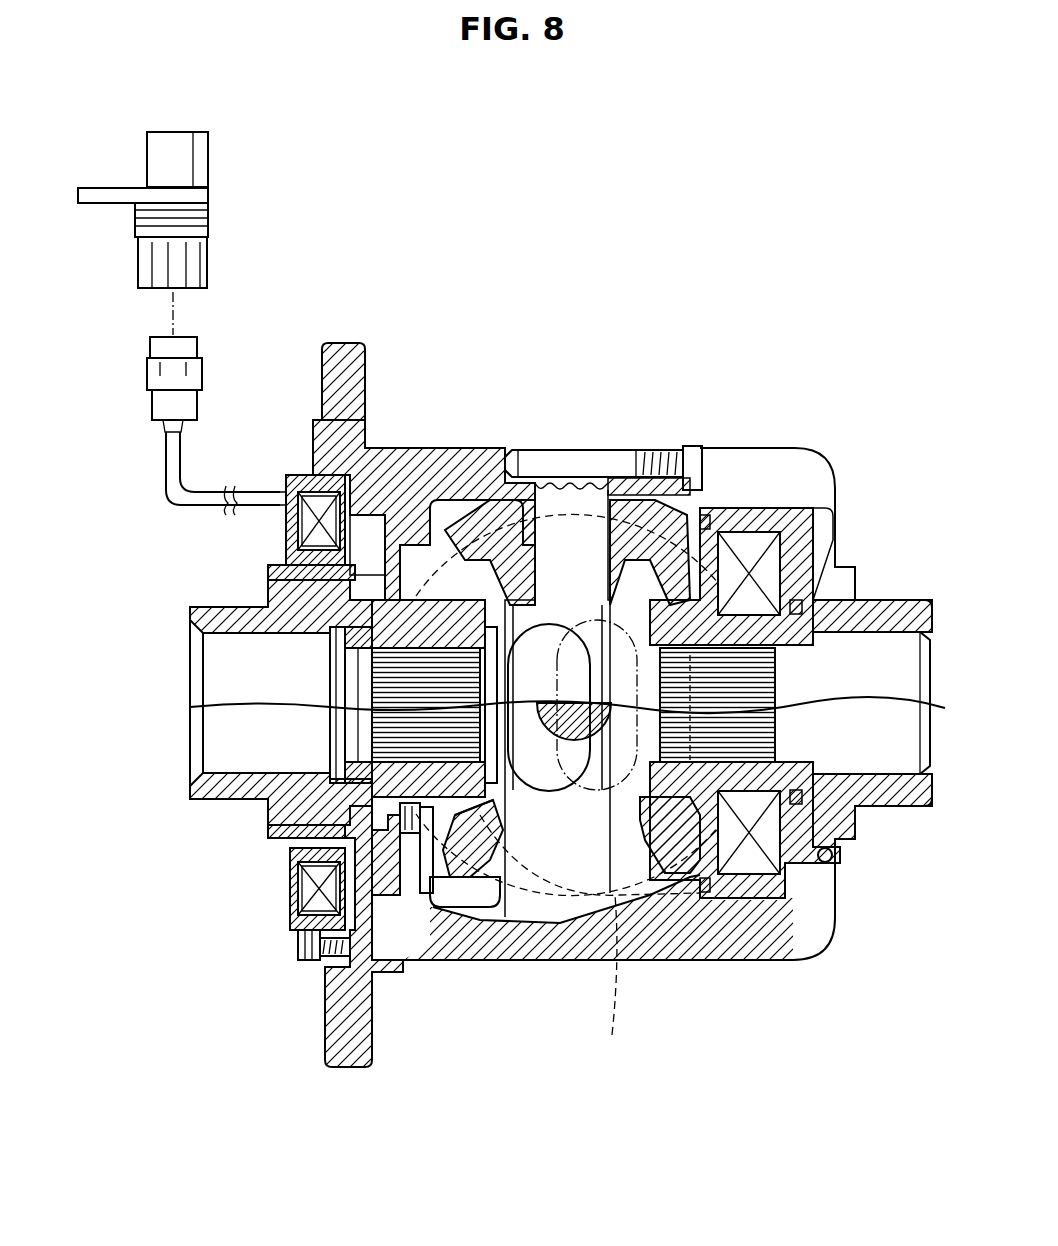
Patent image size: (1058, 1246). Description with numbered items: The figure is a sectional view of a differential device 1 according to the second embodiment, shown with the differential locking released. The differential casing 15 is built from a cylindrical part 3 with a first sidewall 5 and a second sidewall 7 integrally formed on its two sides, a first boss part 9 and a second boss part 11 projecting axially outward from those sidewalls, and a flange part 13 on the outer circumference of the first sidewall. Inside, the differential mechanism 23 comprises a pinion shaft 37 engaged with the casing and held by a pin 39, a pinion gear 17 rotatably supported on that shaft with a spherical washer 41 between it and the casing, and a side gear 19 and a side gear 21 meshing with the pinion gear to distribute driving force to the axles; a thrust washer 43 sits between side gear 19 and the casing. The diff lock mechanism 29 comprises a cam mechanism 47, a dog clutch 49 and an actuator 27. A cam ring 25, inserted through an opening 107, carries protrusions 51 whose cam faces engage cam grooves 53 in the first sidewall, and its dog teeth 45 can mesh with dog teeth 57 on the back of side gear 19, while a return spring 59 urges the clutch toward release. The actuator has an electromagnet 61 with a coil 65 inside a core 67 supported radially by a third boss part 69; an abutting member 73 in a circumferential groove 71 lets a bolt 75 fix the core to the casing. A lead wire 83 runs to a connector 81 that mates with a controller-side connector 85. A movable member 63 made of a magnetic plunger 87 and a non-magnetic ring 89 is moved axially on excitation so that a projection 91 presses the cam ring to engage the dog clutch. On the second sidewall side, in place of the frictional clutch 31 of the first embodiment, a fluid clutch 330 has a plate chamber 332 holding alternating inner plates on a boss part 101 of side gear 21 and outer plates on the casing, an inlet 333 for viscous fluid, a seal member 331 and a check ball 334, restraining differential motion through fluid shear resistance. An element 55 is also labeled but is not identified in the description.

The differential device 1 is at (596, 222).
The cylindrical part 3 is at (742, 470).
The first sidewall 5 is at (315, 470).
The second sidewall 7 is at (835, 480).
The first boss part 9 is at (203, 620).
The second boss part 11 is at (895, 610).
The flange part 13 is at (342, 355).
The differential casing 15 is at (462, 448).
The pinion gear 17 is at (520, 500).
The side gear 19 is at (436, 884).
The side gear 21 is at (690, 885).
The differential mechanism 23 is at (555, 890).
The cam ring 25 is at (395, 895).
The actuator 27 is at (235, 458).
The diff lock mechanism 29 is at (285, 282).
The frictional clutch 31 is at (750, 925).
The pinion shaft 37 is at (560, 505).
The pin 39 is at (586, 468).
The spherical washer 41 is at (612, 505).
The thrust washer 43 is at (500, 812).
The dog teeth 45 is at (412, 835).
The cam mechanism 47 is at (392, 490).
The dog clutch 49 is at (428, 545).
The protrusions 51 is at (356, 560).
The cam grooves 53 is at (372, 515).
The rotor circle 55 is at (500, 600).
The dog teeth 57 is at (482, 850).
The return spring 59 is at (500, 850).
The electromagnet 61 is at (262, 920).
The movable member 63 is at (265, 570).
The coil 65 is at (310, 880).
The core 67 is at (290, 843).
The third boss part 69 is at (322, 790).
The circumferential groove 71 is at (298, 478).
The abutting member 73 is at (310, 955).
The bolt 75 is at (340, 960).
The connector 81 is at (147, 375).
The lead wire 83 is at (166, 465).
The connector 85 is at (147, 152).
The plunger 87 is at (290, 625).
The ring 89 is at (286, 810).
The projection 91 is at (335, 640).
The boss part 101 is at (655, 790).
The opening 107 is at (590, 942).
The fluid clutch 330 is at (788, 345).
The seal member 331 is at (760, 530).
The plate chamber 332 is at (760, 545).
The inlet 333 is at (810, 875).
The check ball 334 is at (840, 862).